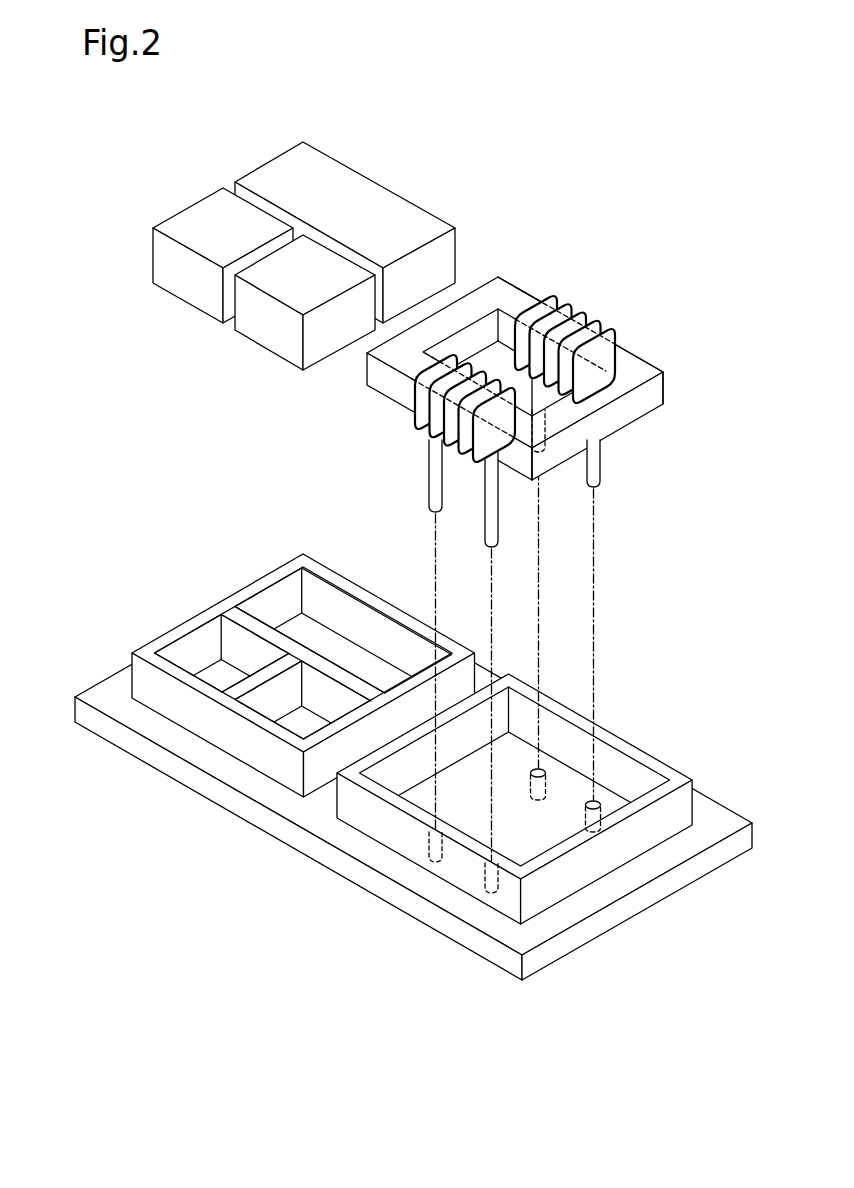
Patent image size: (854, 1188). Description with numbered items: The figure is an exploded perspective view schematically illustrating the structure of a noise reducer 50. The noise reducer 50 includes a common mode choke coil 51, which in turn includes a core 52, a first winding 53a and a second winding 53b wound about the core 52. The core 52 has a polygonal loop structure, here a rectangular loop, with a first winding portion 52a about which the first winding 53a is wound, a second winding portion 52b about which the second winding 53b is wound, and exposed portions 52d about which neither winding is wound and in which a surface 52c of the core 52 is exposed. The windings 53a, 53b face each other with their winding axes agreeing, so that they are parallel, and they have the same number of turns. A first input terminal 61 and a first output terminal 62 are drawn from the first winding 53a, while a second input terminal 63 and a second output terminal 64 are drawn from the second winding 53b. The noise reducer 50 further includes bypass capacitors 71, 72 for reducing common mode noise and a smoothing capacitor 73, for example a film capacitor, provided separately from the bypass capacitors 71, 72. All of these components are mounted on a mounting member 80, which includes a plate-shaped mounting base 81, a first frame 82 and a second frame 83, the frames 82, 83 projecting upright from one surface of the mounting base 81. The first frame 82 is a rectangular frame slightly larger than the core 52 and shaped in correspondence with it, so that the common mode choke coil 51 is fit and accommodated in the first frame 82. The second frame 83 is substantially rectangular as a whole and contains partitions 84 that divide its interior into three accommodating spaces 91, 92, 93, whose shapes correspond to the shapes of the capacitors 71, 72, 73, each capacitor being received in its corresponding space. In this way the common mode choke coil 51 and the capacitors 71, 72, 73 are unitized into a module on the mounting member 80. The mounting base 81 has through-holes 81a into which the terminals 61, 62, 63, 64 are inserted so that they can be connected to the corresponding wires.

The noise reducer 50 is at (526, 326).
The common mode choke coil 51 is at (526, 383).
The core 52 is at (537, 378).
The first winding portion 52a is at (417, 435).
The second winding portion 52b is at (568, 307).
The surface 52c is at (627, 358).
The exposed portions 52d is at (647, 367).
The first winding 53a is at (430, 407).
The second winding 53b is at (565, 327).
The first input terminal 61 is at (484, 524).
The first output terminal 62 is at (428, 477).
The second input terminal 63 is at (601, 456).
The second output terminal 64 is at (546, 458).
The bypass capacitor 71 is at (262, 328).
The bypass capacitor 72 is at (182, 282).
The smoothing capacitor 73 is at (372, 186).
The mounting member 80 is at (413, 767).
The mounting base 81 is at (632, 906).
The through-holes 81a is at (592, 802).
The first frame 82 is at (514, 836).
The second frame 83 is at (293, 682).
The partitions 84 is at (270, 673).
The accommodating space 91 is at (305, 722).
The accommodating space 92 is at (223, 675).
The accommodating space 93 is at (393, 643).